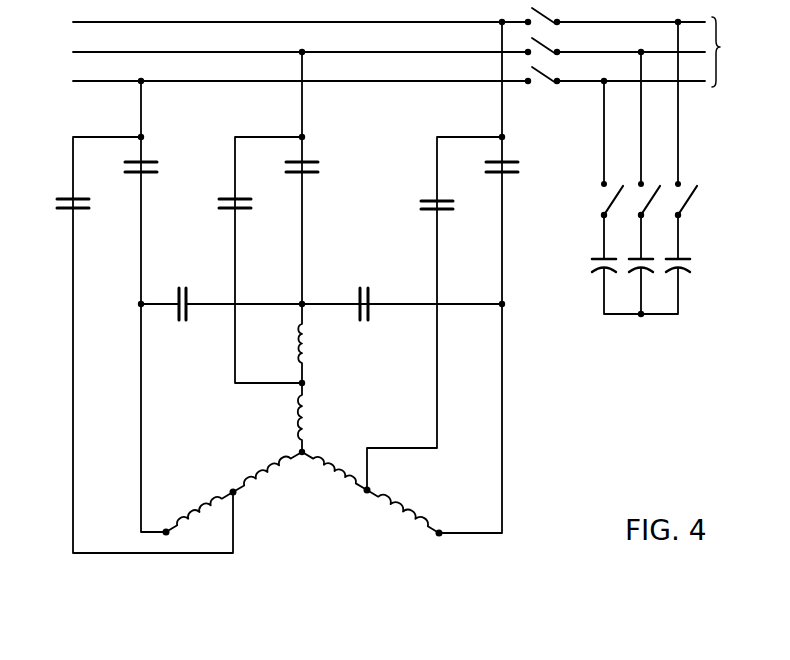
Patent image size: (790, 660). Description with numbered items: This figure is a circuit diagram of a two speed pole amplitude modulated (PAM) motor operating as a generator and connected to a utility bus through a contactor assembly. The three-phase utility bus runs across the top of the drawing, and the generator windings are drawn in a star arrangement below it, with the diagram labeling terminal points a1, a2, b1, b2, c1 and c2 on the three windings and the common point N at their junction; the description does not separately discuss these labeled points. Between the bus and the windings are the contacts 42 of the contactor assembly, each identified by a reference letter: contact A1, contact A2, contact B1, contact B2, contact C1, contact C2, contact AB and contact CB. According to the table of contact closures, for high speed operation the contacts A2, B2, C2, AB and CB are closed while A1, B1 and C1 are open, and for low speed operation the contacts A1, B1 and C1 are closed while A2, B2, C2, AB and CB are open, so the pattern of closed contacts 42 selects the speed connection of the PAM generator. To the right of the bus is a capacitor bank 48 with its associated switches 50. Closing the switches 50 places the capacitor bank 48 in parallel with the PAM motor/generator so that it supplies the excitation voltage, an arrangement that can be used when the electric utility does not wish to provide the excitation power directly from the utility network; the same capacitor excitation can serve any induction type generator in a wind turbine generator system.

The contacts 42 is at (252, 192).
The capacitor bank 48 is at (690, 262).
The switches 50 is at (694, 186).
The contact C1 is at (156, 168).
The contact C2 is at (89, 204).
The contact B1 is at (318, 167).
The contact B2 is at (251, 204).
The contact A1 is at (518, 167).
The contact A2 is at (453, 205).
The contact CB is at (183, 321).
The contact AB is at (364, 321).
The winding terminal b1 is at (304, 303).
The winding tap b2 / phase winding b b2 is at (304, 382).
The neutral point N is at (302, 454).
The winding terminal c1 / phase winding c c1 is at (166, 530).
The winding tap c2 is at (233, 490).
The winding terminal a1 / phase winding a a1 is at (440, 531).
The winding tap a2 is at (369, 489).